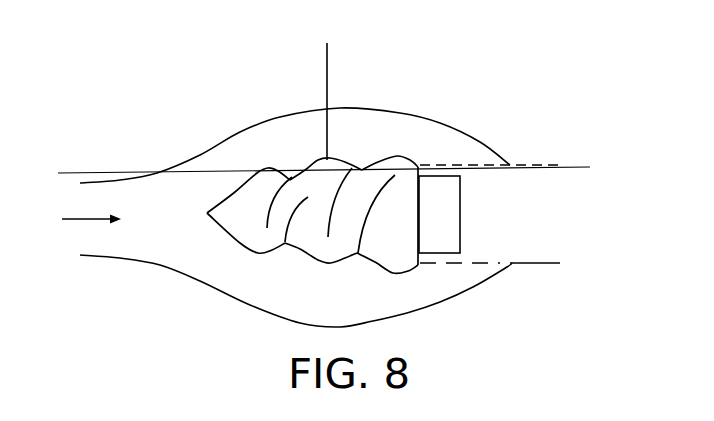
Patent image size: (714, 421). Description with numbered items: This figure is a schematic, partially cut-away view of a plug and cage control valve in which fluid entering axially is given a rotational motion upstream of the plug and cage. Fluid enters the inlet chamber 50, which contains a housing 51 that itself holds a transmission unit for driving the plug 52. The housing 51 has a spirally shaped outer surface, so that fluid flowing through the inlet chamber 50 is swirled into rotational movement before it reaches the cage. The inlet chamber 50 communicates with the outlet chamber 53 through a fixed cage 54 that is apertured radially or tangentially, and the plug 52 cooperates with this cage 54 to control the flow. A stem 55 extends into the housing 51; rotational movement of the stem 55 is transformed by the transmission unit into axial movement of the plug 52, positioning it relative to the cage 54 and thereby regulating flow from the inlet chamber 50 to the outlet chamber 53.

The inlet chamber 50 is at (213, 265).
The housing 51 is at (385, 155).
The plug 52 is at (460, 223).
The outlet chamber 53 is at (540, 198).
The cage 54 is at (453, 165).
The stem 55 is at (325, 78).